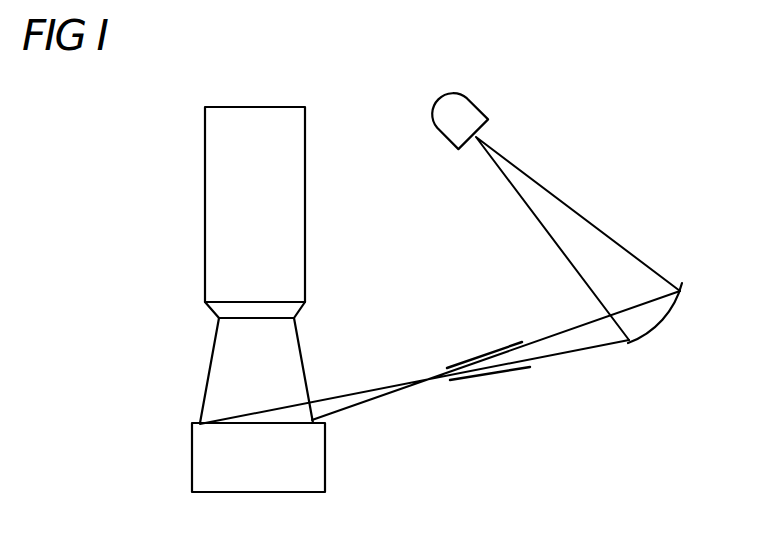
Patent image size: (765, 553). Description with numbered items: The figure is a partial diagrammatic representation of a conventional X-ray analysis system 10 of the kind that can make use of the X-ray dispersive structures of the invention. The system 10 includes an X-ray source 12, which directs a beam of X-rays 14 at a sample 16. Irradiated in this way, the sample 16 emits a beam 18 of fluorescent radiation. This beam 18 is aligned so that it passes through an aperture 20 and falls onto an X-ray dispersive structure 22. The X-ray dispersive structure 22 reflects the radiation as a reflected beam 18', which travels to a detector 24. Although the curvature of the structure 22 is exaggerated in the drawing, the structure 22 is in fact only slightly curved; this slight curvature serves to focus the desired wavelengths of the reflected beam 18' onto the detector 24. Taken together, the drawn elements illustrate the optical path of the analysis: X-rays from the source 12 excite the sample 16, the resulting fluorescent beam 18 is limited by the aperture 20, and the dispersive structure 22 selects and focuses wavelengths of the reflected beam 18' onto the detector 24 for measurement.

The X-ray analysis system 10 is at (522, 146).
The X-ray source 12 is at (268, 222).
The beam of X-rays 14 is at (272, 383).
The sample 16 is at (317, 474).
The beam of fluorescent radiation 18 is at (440, 374).
The reflected beam 18' is at (597, 238).
The aperture 20 is at (500, 374).
The X-ray dispersive structure 22 is at (668, 318).
The detector 24 is at (455, 126).